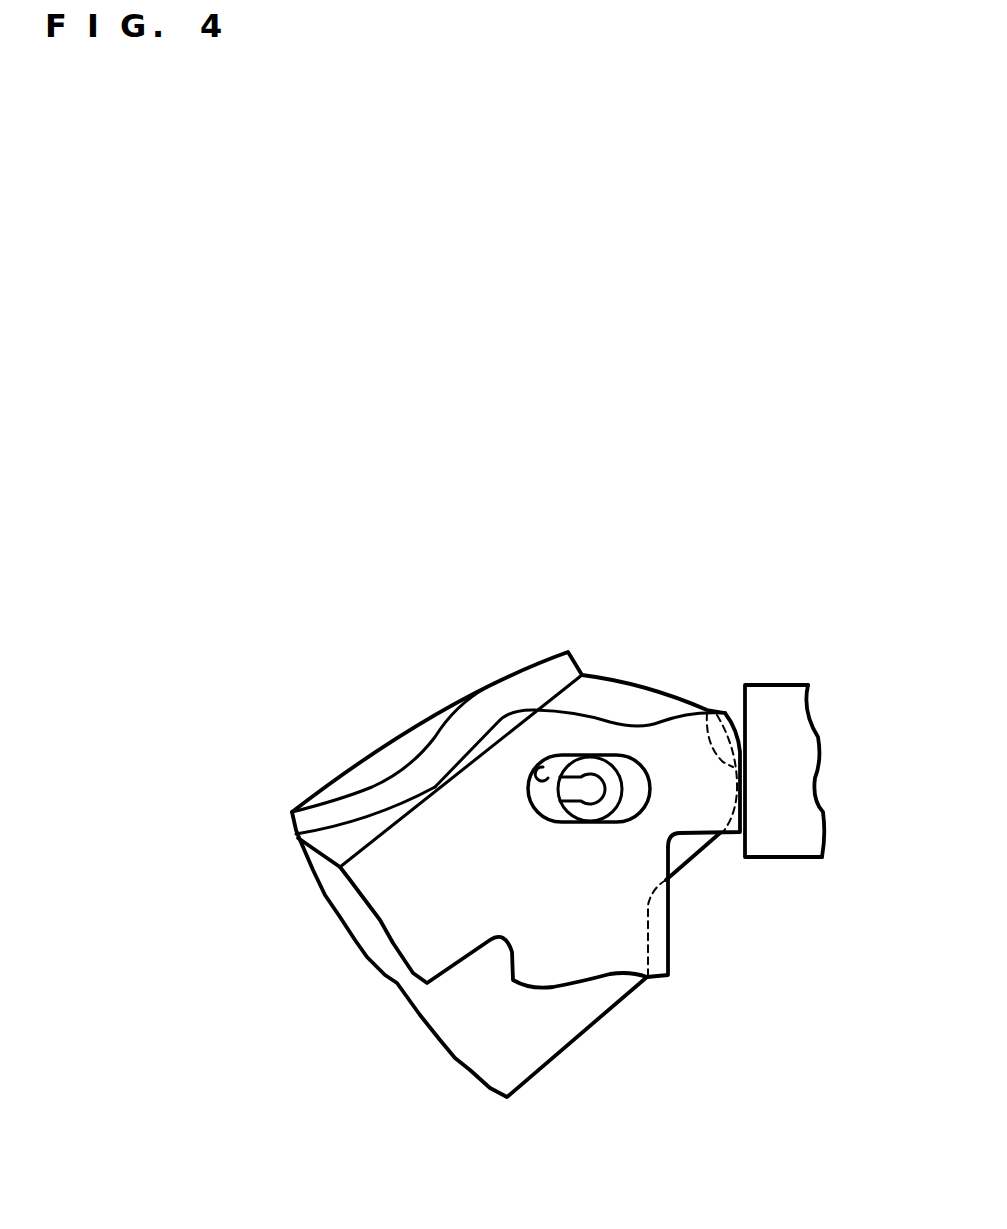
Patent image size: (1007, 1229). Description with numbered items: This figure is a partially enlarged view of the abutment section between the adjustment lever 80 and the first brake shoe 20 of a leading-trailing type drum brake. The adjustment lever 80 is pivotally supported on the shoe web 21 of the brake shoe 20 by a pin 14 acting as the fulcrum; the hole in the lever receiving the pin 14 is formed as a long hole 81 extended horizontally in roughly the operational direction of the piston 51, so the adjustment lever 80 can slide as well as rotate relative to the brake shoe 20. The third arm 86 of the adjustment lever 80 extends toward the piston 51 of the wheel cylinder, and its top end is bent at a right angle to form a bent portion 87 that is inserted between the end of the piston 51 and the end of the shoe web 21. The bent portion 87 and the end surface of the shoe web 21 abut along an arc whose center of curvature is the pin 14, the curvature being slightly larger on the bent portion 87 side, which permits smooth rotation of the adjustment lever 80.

The pin 14 is at (583, 763).
The first brake shoe 20 is at (382, 740).
The shoe web 21 is at (607, 690).
The piston 51 is at (803, 752).
The adjustment lever 80 is at (673, 967).
The long hole 81 is at (530, 768).
The third arm 86 is at (702, 818).
The bent portion 87 is at (710, 708).